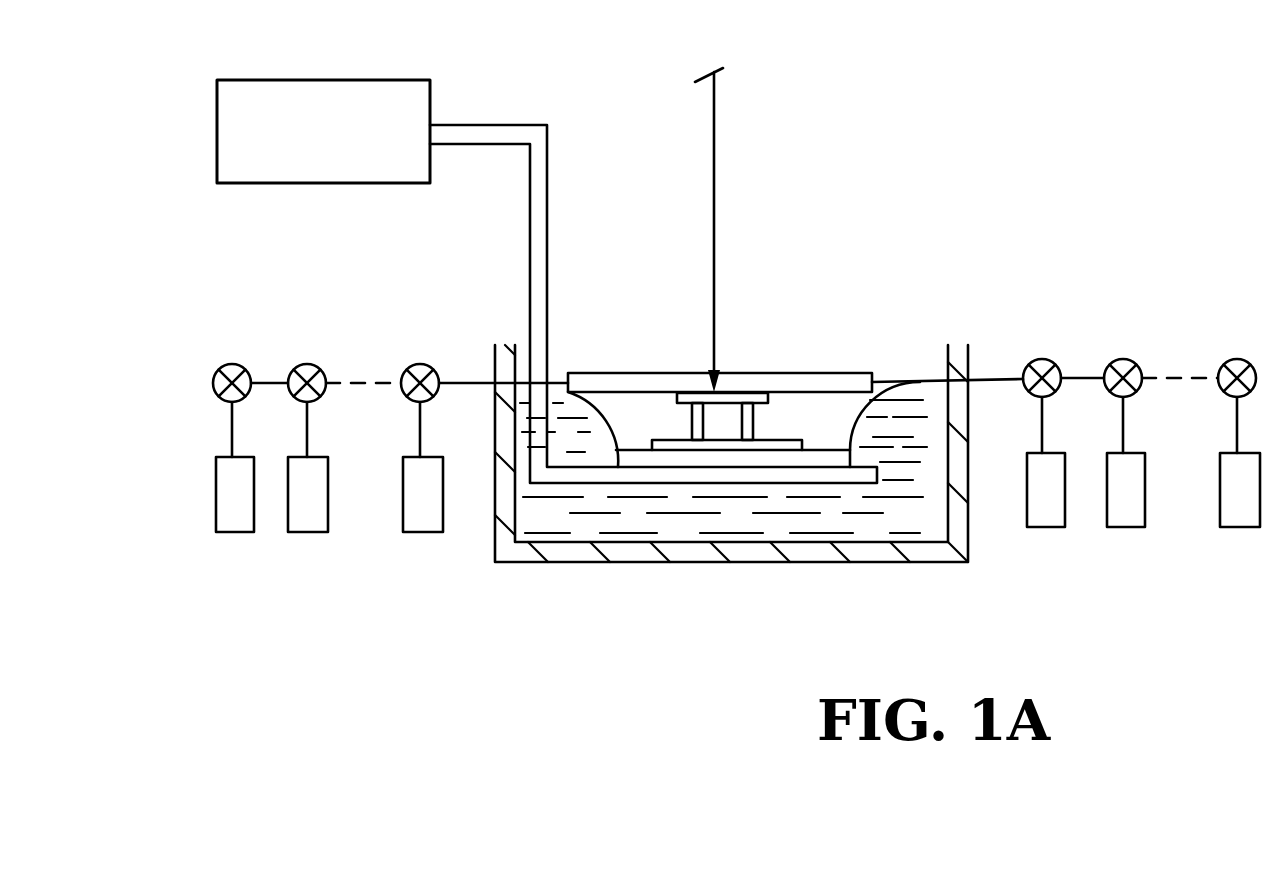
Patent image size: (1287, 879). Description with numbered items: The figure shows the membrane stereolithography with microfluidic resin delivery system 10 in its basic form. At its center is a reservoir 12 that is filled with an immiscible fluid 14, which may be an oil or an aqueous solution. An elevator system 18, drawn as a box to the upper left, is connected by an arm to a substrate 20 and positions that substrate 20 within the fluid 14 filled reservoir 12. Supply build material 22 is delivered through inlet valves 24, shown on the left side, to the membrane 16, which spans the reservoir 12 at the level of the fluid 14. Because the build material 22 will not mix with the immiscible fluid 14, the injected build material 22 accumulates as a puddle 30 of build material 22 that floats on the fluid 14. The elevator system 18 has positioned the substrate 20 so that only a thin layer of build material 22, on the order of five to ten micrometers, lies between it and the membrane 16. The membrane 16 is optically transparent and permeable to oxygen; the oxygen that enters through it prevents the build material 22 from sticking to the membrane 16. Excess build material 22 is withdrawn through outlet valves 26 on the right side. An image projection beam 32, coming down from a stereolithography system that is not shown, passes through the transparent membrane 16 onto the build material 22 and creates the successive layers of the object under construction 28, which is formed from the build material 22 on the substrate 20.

The membrane stereolithography with microfluidic resin delivery system 10 is at (972, 105).
The reservoir 12 is at (910, 560).
The immiscible fluid 14 is at (687, 515).
The membrane 16 is at (612, 373).
The elevator system 18 is at (380, 80).
The substrate 20 is at (806, 459).
The supply build material 22 is at (462, 538).
The inlet valves 24 is at (442, 355).
The outlet valves 26 is at (1252, 348).
The object under construction 28 is at (753, 415).
The puddle of build material 30 is at (660, 430).
The image projection beam 32 is at (714, 168).